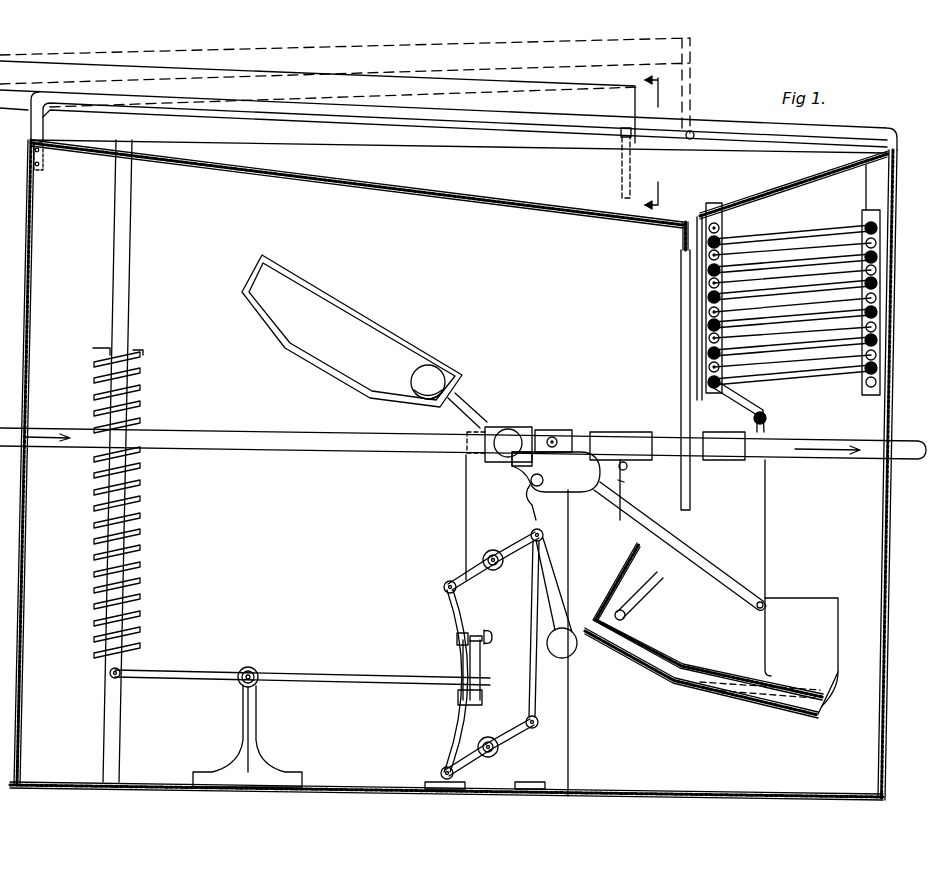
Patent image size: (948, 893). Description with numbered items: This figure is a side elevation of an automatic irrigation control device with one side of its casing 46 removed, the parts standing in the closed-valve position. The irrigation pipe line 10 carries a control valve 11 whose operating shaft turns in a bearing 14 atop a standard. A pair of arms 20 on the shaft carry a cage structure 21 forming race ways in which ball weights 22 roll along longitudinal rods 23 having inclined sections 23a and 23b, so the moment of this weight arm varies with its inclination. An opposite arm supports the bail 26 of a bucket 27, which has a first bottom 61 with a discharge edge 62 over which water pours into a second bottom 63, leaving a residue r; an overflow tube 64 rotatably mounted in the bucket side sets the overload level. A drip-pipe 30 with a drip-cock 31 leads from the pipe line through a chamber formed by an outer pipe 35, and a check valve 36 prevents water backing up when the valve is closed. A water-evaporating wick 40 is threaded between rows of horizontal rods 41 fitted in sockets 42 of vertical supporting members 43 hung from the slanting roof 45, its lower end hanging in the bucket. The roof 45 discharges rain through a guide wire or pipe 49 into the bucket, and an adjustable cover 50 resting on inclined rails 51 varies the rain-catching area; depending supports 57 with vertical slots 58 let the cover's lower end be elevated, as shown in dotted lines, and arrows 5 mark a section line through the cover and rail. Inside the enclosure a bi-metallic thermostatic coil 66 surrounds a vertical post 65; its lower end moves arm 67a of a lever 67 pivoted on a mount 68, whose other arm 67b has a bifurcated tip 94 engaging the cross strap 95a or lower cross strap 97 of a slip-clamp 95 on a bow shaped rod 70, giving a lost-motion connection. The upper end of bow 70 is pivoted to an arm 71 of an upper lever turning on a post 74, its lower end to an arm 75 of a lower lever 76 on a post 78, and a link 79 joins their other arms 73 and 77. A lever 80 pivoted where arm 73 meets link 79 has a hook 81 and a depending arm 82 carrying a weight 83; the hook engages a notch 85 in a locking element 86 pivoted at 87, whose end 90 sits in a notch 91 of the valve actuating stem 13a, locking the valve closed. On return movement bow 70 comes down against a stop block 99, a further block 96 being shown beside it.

The section line 5 is at (661, 139).
The irrigation pipe line 10 is at (322, 448).
The control valve 11 is at (530, 426).
The valve actuating stem 13a is at (504, 428).
The bearing 14 is at (21, 167).
The arms 20 is at (465, 405).
The cage structure 21 is at (362, 307).
The ball weights 22 is at (410, 376).
The longitudinal rods 23 is at (298, 354).
The inclined section 23a is at (248, 320).
The inclined section 23b is at (395, 405).
The bail 26 is at (690, 558).
The bucket 27 is at (792, 596).
The drip-pipe 30 is at (622, 490).
The drip-cock 31 is at (628, 466).
The outer pipe 35 is at (612, 432).
The check valve 36 is at (708, 432).
The water-evaporating wick 40 is at (690, 312).
The horizontal rods 41 is at (880, 282).
The sockets 42 is at (710, 340).
The vertical supporting members 43 is at (864, 206).
The inclined roof 45 is at (806, 178).
The casing 46 is at (33, 300).
The discharge pipe or guide wire 49 is at (678, 244).
The cover 50 is at (6, 46).
The inclined rails 51 is at (712, 128).
The depending supports 57 is at (632, 165).
The vertical slot 58 is at (620, 170).
The first bottom 61 is at (650, 660).
The discharge edge 62 is at (828, 676).
The second bottom 63 is at (672, 676).
The overflow tube 64 is at (640, 600).
The vertical post 65 is at (130, 258).
The bi-metallic thermostatic coil 66 is at (140, 541).
The lever 67 is at (210, 668).
The lever arm 67a is at (170, 680).
The lever arm 67b is at (386, 686).
The mount 68 is at (260, 708).
The bow shaped rod 70 is at (454, 622).
The arm 71 is at (465, 560).
The arm 73 is at (506, 560).
The post 74 is at (496, 568).
The arm 75 is at (468, 764).
The lower lever 76 is at (498, 736).
The arm 77 is at (550, 738).
The post 78 is at (500, 756).
The link 79 is at (538, 678).
The lever 80 is at (548, 568).
The hook 81 is at (528, 506).
The depending arm 82 is at (560, 600).
The weight 83 is at (578, 654).
The notch 85 is at (539, 486).
The locking element 86 is at (556, 472).
The pivot 87 is at (556, 440).
The end of locking element 90 is at (516, 466).
The notch 91 is at (500, 448).
The bifurcated tip 94 is at (468, 690).
The slip-clamp 95 is at (482, 664).
The cross strap 95a is at (458, 648).
The base 96 is at (536, 782).
The lower cross strap 97 is at (466, 706).
The stop block 99 is at (432, 780).
The residue r is at (725, 700).